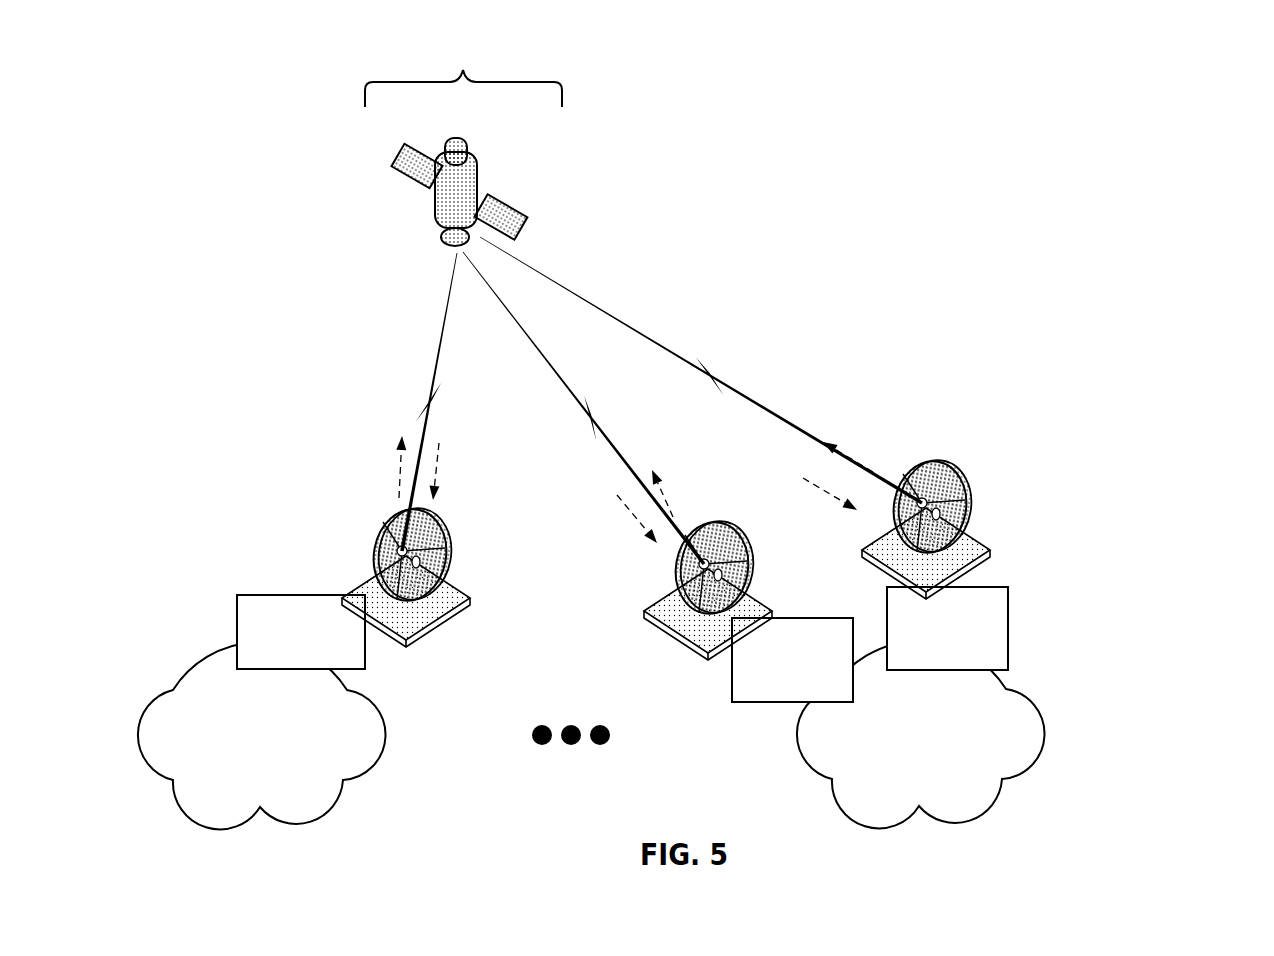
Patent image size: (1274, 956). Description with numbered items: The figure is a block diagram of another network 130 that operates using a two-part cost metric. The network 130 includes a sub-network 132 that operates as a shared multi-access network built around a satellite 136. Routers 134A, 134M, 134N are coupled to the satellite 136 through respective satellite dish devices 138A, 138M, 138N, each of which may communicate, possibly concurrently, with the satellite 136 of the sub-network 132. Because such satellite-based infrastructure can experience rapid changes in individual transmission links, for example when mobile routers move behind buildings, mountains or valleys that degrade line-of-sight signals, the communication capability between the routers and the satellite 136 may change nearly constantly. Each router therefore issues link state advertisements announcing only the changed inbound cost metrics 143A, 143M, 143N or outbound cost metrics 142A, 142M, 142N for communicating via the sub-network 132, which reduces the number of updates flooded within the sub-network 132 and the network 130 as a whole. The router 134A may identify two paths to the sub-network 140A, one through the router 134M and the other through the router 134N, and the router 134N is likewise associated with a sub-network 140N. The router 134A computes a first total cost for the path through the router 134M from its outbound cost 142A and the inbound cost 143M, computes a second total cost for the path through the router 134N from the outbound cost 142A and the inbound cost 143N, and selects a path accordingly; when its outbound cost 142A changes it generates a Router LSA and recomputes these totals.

The network 130 is at (1188, 82).
The sub-network 132 is at (463, 131).
The router 134A is at (275, 657).
The router 134M is at (765, 684).
The router 134N is at (921, 653).
The satellite 136 is at (467, 152).
The satellite dish device 138A is at (440, 610).
The satellite dish device 138M is at (757, 610).
The satellite dish device 138N is at (975, 548).
The sub-network 140A is at (235, 759).
The sub-network 140N is at (894, 759).
The outbound cost metric 142A is at (397, 483).
The outbound cost metric 142M is at (677, 503).
The outbound cost metric 142N is at (868, 463).
The inbound cost metric 143A is at (442, 458).
The inbound cost metric 143M is at (633, 513).
The inbound cost metric 143N is at (830, 490).